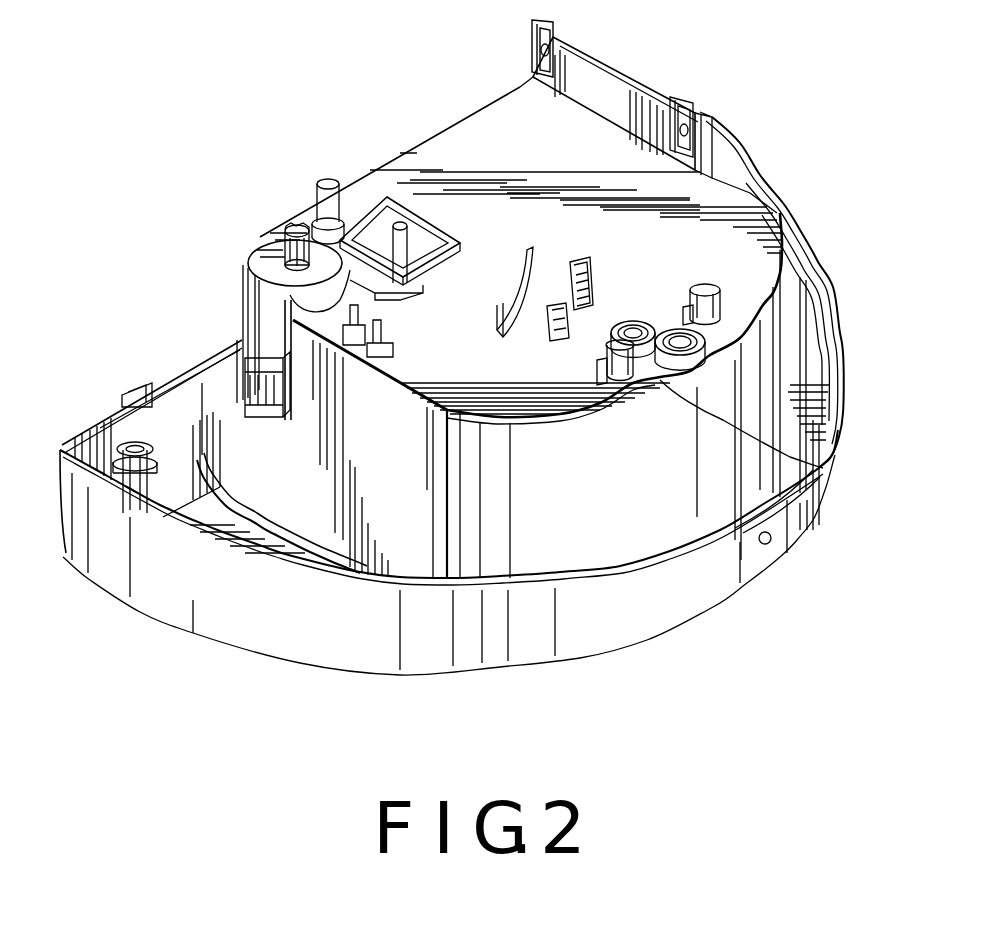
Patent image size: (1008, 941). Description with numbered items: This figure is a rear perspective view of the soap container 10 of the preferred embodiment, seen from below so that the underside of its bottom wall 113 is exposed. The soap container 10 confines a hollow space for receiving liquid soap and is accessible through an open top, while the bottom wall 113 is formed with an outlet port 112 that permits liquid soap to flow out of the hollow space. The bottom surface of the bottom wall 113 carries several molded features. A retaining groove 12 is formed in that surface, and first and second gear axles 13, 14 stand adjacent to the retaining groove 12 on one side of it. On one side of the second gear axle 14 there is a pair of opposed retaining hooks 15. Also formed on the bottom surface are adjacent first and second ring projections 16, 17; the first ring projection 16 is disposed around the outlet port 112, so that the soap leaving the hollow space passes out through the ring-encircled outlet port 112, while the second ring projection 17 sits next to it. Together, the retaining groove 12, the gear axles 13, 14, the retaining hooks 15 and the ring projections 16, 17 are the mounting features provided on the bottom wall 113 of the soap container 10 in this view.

The soap container 10 is at (193, 620).
The retaining groove 12 is at (244, 265).
The first gear axle 13 is at (320, 188).
The second gear axle 14 is at (378, 203).
The retaining hooks 15 is at (573, 260).
The first ring projection 16 is at (823, 468).
The second ring projection 17 is at (700, 365).
The outlet port 112 is at (645, 322).
The bottom wall 113 is at (517, 150).